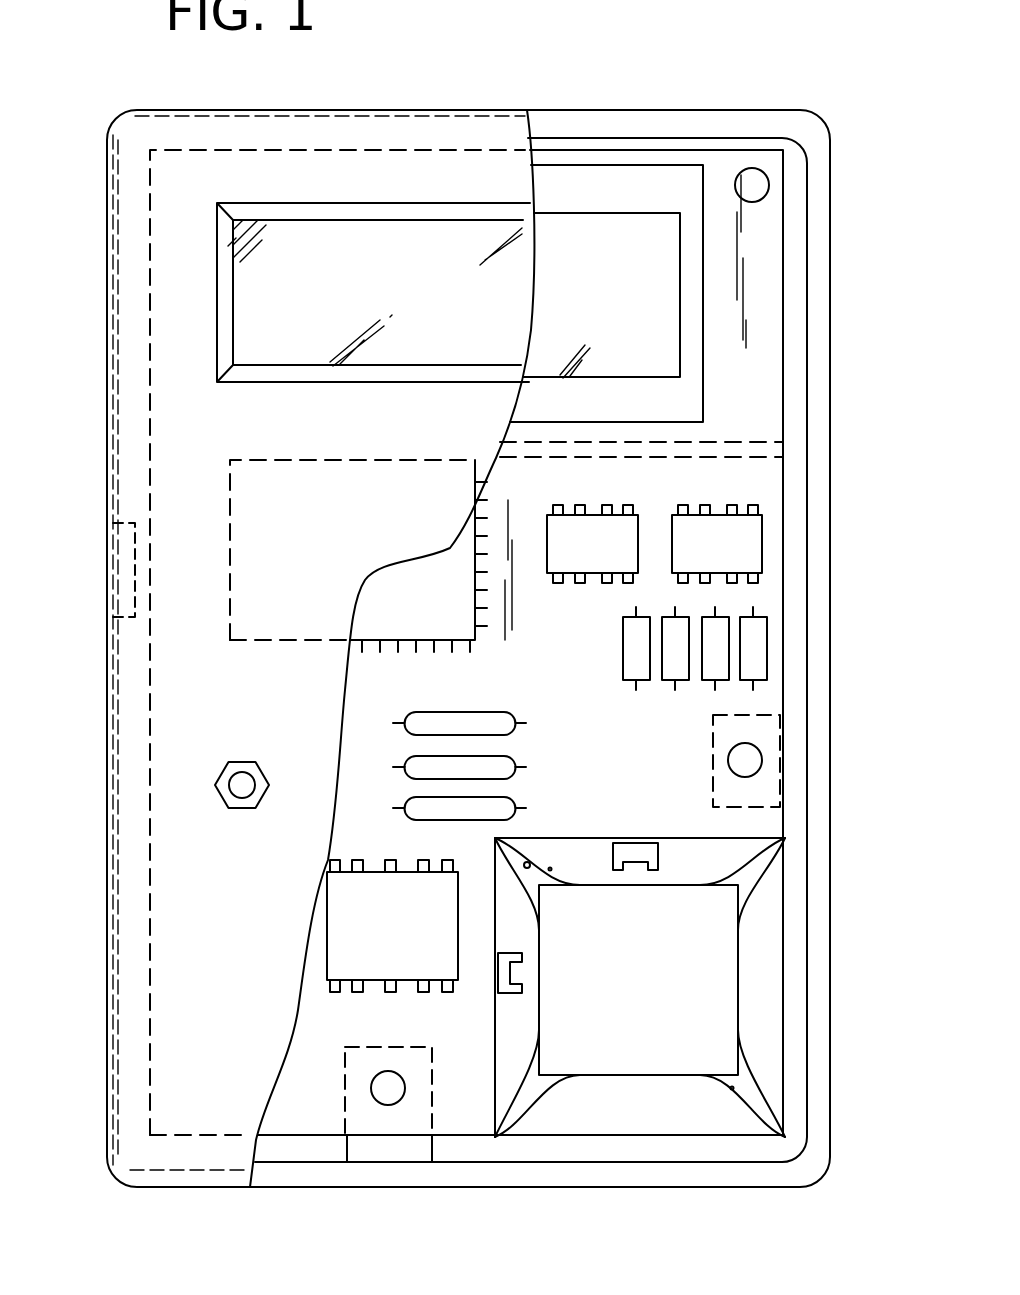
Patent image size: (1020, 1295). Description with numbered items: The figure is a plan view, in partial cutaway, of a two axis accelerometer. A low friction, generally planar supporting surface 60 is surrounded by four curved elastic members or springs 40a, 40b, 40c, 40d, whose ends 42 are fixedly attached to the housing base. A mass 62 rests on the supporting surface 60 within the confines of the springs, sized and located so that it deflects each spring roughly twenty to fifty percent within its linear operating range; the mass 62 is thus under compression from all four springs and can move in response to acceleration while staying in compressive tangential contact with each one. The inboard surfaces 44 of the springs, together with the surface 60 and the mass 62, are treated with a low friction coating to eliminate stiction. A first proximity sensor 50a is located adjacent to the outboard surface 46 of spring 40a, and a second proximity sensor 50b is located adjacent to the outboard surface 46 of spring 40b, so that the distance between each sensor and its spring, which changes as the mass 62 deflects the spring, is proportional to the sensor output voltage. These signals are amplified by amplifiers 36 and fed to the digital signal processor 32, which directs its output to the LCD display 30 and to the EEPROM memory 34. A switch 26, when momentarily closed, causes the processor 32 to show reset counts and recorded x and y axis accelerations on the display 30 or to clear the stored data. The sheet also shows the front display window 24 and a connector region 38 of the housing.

The display 24 is at (357, 306).
The switch 26 is at (257, 766).
The display 30 is at (624, 324).
The digital signal processor 32 is at (431, 604).
The memory 34 is at (408, 961).
The amplifier 36 is at (735, 568).
The connector 38 is at (127, 580).
The curved elastic member 40a is at (750, 866).
The curved elastic member 40b is at (522, 1100).
The curved elastic member 40c is at (532, 1097).
The curved elastic member 40d is at (762, 1075).
The spring ends 42 is at (495, 838).
The inboard surface 44 is at (526, 862).
The outboard surface 46 is at (550, 868).
The proximity sensor 50a is at (650, 843).
The proximity sensor 50b is at (498, 975).
The supporting surface 60 is at (650, 983).
The mass 62 is at (646, 1024).